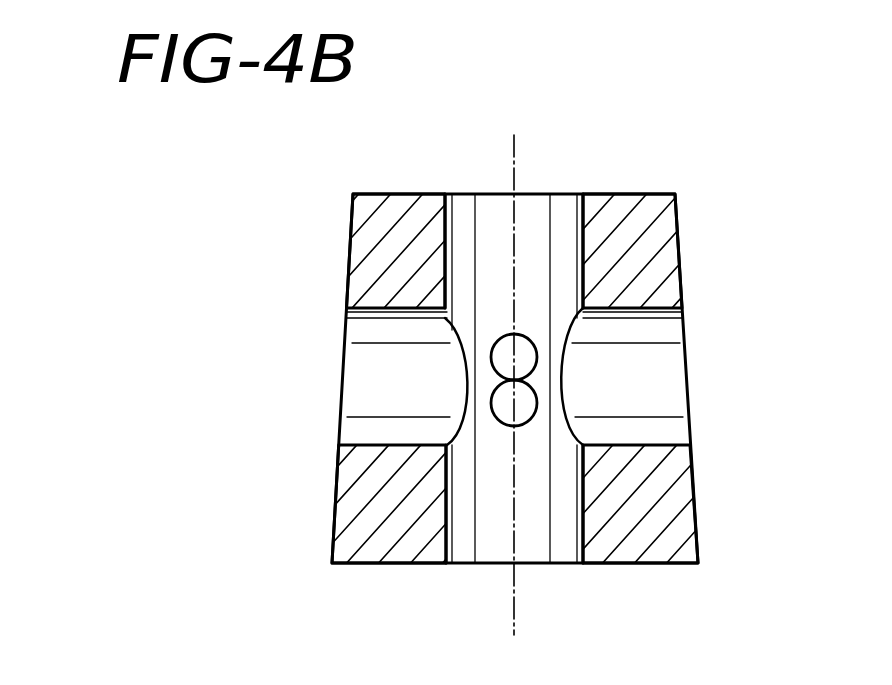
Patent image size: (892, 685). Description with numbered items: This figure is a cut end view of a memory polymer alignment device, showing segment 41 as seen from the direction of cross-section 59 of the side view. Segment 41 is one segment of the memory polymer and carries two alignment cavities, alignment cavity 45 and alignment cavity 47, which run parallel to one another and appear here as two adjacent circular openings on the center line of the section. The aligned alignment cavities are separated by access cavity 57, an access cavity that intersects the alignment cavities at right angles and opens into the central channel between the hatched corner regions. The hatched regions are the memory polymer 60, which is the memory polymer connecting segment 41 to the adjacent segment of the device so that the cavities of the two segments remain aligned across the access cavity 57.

The segment of the memory polymer 41 is at (347, 283).
The alignment cavity 45 is at (533, 406).
The parallel alignment cavity 47 is at (500, 337).
The access cavity 57 is at (380, 373).
The cross-section 59 is at (520, 160).
The memory polymer 60 is at (365, 218).